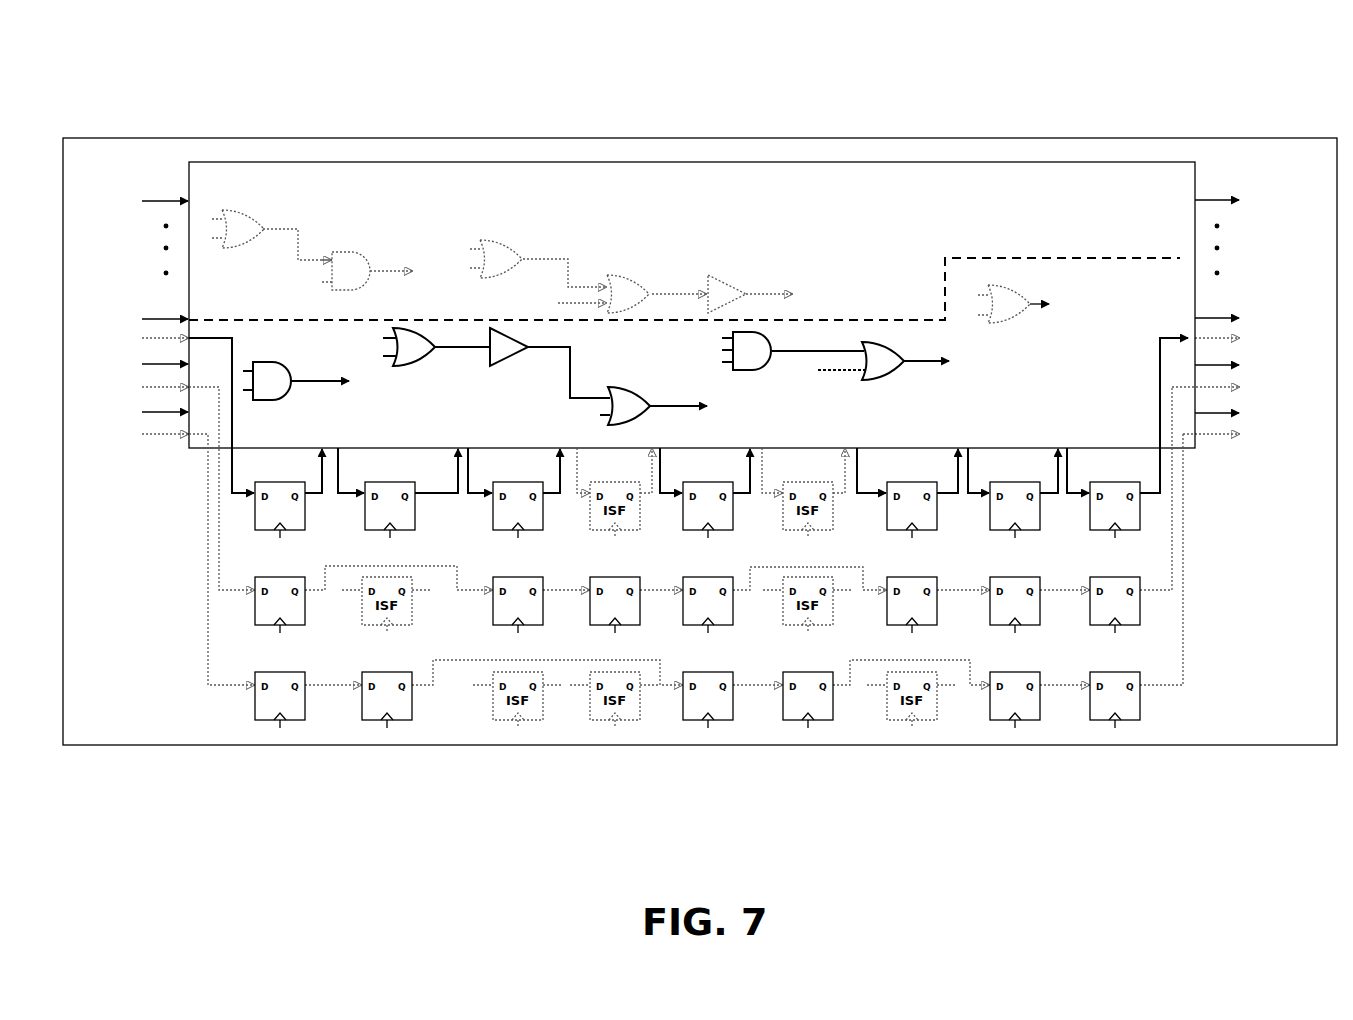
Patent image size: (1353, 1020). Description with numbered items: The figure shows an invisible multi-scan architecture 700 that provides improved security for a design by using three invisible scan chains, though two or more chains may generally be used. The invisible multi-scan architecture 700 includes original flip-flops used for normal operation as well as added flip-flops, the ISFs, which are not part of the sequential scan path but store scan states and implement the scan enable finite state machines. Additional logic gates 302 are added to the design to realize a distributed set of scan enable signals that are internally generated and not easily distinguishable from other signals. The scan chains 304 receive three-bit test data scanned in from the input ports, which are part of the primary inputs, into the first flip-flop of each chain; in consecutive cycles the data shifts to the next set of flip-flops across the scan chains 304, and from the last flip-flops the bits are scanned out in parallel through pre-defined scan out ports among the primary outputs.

The invisible multi-scan architecture 700 is at (1237, 76).
The additional logic gates 302 is at (963, 170).
The scan chains 304 is at (250, 728).